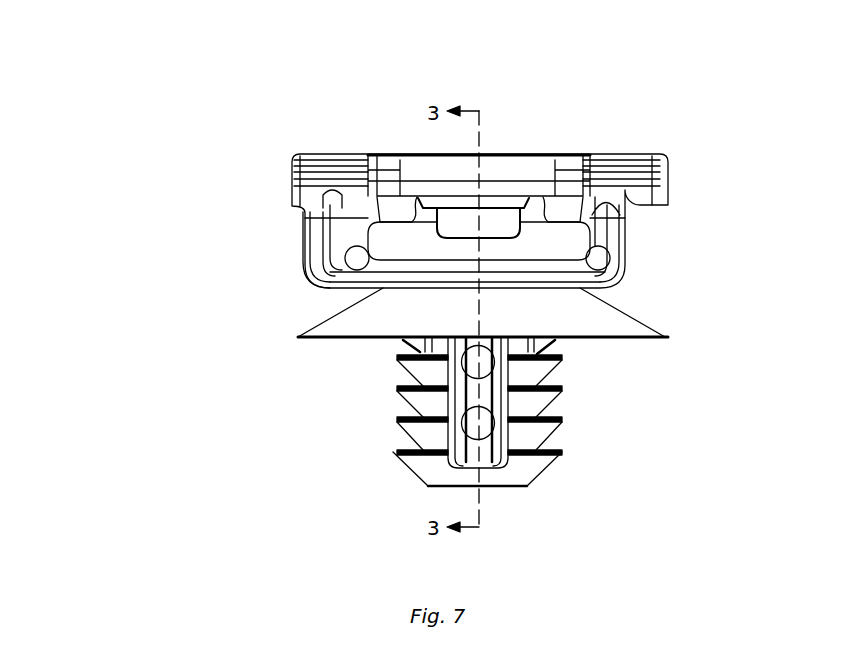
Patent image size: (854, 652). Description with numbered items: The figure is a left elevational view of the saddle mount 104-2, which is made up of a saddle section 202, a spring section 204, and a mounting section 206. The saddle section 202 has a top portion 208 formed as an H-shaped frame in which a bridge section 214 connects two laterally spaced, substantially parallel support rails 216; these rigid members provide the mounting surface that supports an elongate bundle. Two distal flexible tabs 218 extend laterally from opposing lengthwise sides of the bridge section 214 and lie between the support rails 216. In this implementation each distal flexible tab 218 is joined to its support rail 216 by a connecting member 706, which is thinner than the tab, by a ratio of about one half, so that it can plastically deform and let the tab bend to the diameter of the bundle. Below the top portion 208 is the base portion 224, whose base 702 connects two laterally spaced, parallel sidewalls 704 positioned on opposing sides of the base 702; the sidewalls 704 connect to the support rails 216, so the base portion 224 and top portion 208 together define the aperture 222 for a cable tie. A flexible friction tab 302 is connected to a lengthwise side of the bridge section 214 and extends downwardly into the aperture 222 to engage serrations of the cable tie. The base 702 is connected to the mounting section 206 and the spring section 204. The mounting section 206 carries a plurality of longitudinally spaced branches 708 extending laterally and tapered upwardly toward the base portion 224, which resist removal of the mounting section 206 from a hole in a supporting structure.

The saddle mount 104-2 is at (172, 89).
The saddle section 202 is at (87, 147).
The top portion 208 is at (200, 150).
The base portion 224 is at (200, 213).
The bridge section 214 is at (427, 198).
The distal flexible tabs 218 is at (500, 154).
The support rails 216 is at (316, 154).
The connecting member 706 is at (388, 154).
The sidewalls 704 is at (305, 240).
The aperture 222 is at (405, 240).
The base 702 is at (456, 288).
The flexible friction tab 302 is at (493, 240).
The spring section 204 is at (665, 312).
The mounting section 206 is at (610, 418).
The branches 708 is at (400, 420).